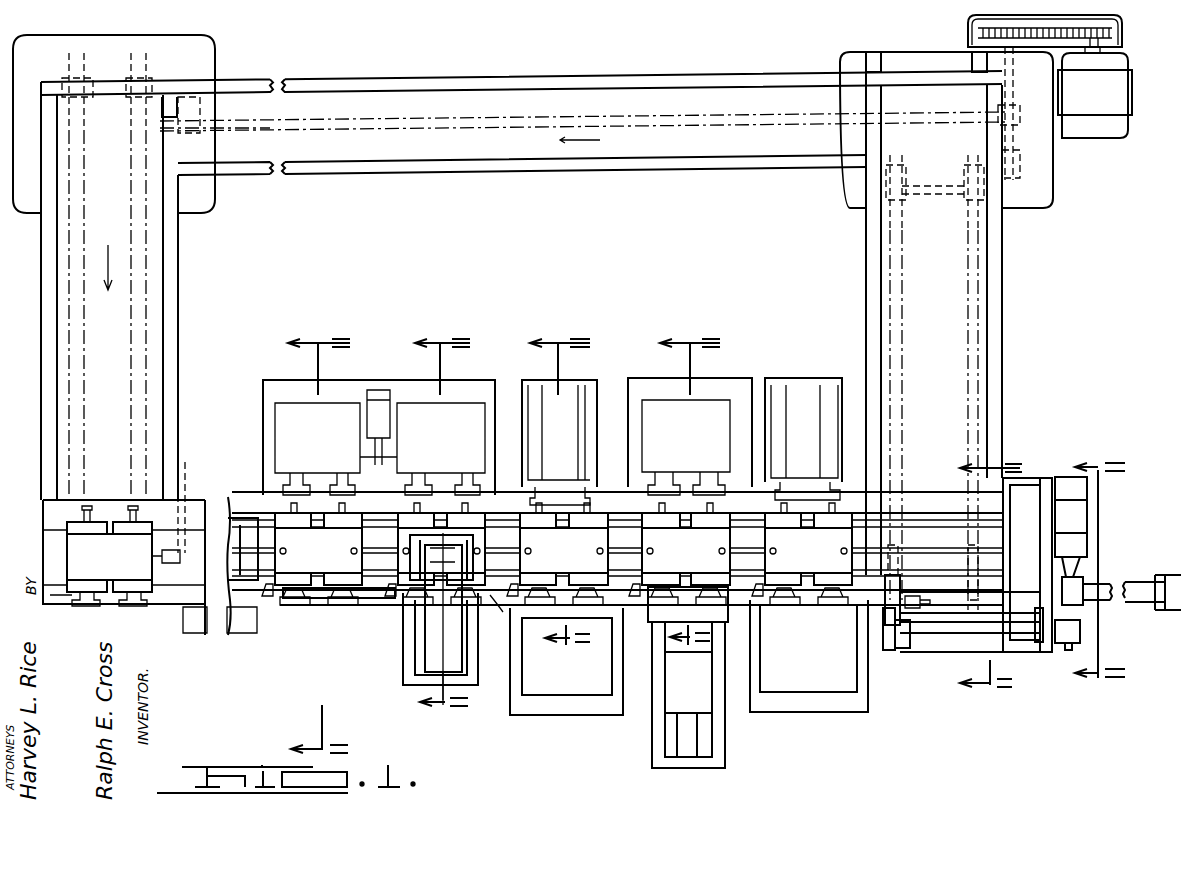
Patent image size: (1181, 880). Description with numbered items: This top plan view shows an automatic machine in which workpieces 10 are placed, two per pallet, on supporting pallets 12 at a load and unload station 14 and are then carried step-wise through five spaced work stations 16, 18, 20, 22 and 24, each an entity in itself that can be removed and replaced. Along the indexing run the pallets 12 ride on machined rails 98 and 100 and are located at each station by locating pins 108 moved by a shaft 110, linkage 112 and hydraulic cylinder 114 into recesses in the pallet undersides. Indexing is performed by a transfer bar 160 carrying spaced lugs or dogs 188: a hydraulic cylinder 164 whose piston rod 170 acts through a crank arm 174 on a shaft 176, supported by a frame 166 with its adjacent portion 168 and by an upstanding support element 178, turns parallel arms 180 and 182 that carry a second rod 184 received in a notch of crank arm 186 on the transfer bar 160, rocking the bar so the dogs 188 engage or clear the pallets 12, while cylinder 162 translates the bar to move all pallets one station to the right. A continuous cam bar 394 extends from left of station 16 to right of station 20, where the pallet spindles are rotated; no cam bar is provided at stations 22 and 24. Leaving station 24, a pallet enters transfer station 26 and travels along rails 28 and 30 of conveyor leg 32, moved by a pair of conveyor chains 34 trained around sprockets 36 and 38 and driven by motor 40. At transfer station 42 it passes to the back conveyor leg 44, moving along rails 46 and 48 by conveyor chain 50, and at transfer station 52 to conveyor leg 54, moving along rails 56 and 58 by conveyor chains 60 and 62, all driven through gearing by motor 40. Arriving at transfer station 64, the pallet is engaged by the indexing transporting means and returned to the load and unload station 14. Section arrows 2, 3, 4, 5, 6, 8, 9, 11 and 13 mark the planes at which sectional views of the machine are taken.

The section line 2-2 / loading station 2 is at (379, 539).
The section line 3- 3 is at (312, 520).
The section line 4- 4 is at (354, 514).
The section line 5- 5 is at (1100, 569).
The section line 6- 6 is at (981, 591).
The section line 8-8 / work station 8 is at (440, 635).
The section line 9- 9 is at (433, 530).
The workpieces 10 is at (140, 598).
The section line 11-11 / work station 11 is at (566, 513).
The supporting pallets 12 is at (112, 556).
The section line 13-13 / work station 13 is at (690, 540).
The load and unload station 14 is at (244, 643).
The work station 16 is at (795, 500).
The work station 18 is at (513, 637).
The work station 20 is at (632, 640).
The work station 22 is at (734, 650).
The work station 24 is at (829, 720).
The transfer station 26 is at (945, 550).
The rail 28 is at (866, 262).
The rail 30 is at (1002, 266).
The conveyor leg 32 is at (940, 320).
The conveyor chains 34 is at (970, 360).
The sprocket 36 is at (968, 162).
The sprocket 38 is at (968, 605).
The motor 40 is at (1112, 96).
The transfer station 42 is at (940, 106).
The back conveyor leg 44 is at (592, 107).
The rail 46 is at (515, 178).
The rail 48 is at (505, 78).
The conveyor chain 50 is at (448, 120).
The transfer station 52 is at (120, 150).
The conveyor leg 54 is at (120, 334).
The rail 56 is at (41, 287).
The rail 58 is at (180, 262).
The conveyor chain 60 is at (84, 378).
The conveyor chain 62 is at (146, 410).
The transfer station 64 is at (55, 540).
The machined rail 98 is at (55, 525).
The machined rail 100 is at (160, 576).
The locating pins 108 is at (280, 512).
The shaft 110 is at (505, 542).
The linkage 112 is at (185, 512).
The hydraulic cylinder 114 is at (195, 465).
The transfer bar 160 is at (462, 600).
The cylinder 162 is at (1108, 590).
The hydraulic cylinder 164 is at (1090, 510).
The frame 166 is at (1045, 555).
The housing wall 168 is at (1020, 592).
The piston rod 170 is at (1078, 572).
The crank arm 174 is at (1082, 638).
The shaft 176 is at (1000, 645).
The upstanding support element 178 is at (890, 655).
The arm 180 is at (1080, 618).
The arm 182 is at (875, 625).
The second rod 184 is at (935, 622).
The crank arm 186 is at (900, 578).
The lugs or dogs 188 is at (395, 610).
The cam bar 394 is at (368, 512).